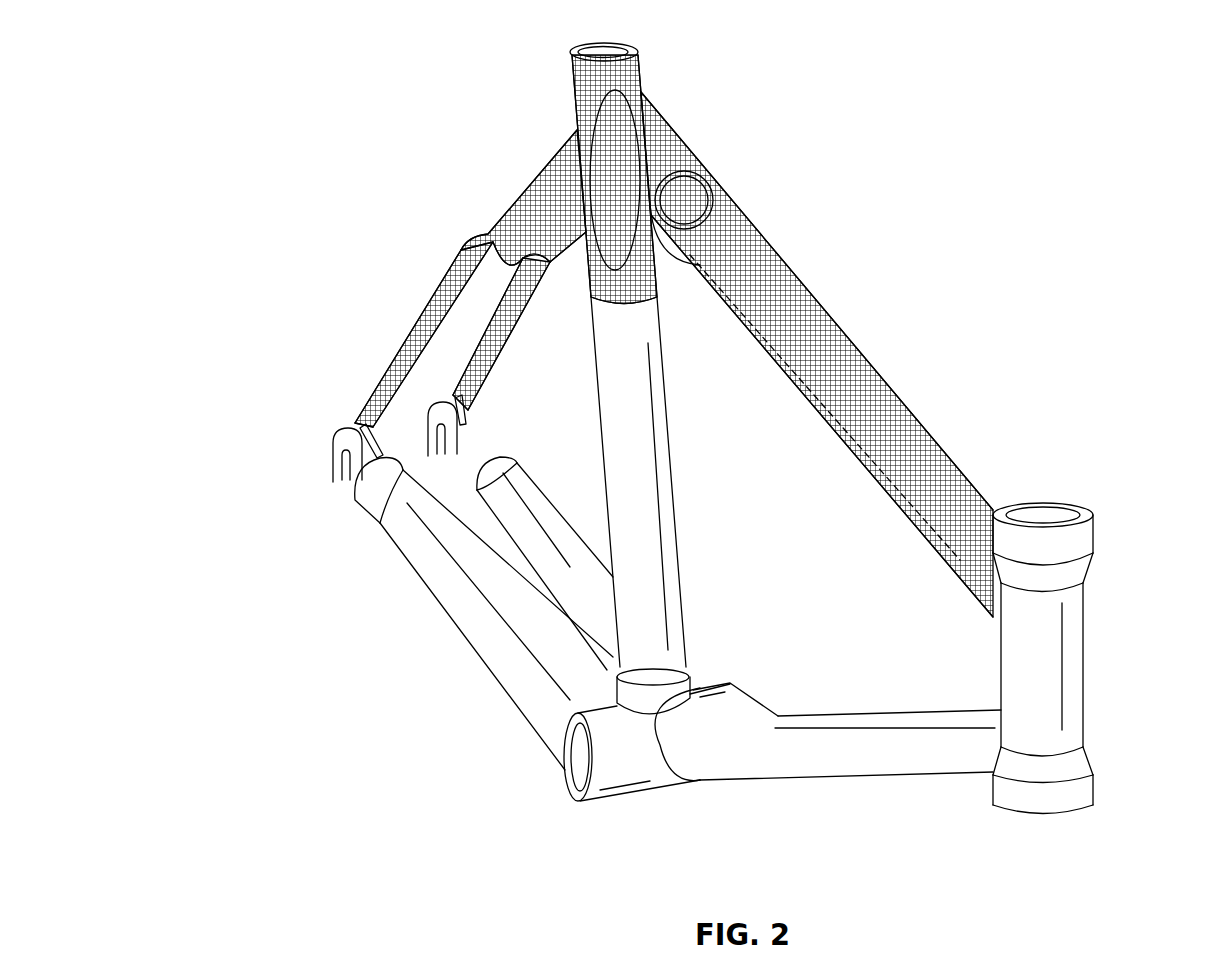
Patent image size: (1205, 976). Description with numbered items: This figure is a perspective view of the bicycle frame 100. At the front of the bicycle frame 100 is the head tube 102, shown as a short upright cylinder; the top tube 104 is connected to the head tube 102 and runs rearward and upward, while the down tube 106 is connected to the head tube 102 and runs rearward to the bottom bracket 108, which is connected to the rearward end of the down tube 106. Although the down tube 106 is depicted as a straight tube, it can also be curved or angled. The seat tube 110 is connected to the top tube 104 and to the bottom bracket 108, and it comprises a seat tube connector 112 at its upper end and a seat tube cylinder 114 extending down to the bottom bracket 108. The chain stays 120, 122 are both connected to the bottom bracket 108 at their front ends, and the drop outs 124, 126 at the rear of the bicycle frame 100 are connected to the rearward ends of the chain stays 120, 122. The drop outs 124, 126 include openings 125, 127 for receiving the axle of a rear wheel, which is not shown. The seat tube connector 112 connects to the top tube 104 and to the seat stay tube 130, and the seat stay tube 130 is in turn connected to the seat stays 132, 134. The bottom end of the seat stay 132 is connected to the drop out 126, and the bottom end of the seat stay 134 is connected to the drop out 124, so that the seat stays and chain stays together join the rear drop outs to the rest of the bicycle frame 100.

The bicycle frame 100 is at (310, 60).
The head tube 102 is at (1073, 660).
The top tube 104 is at (828, 325).
The down tube 106 is at (917, 717).
The bottom bracket 108 is at (620, 790).
The seat tube 110 is at (738, 217).
The seat tube connector 112 is at (578, 78).
The seat tube cylinder 114 is at (667, 427).
The chain stay 120 is at (432, 580).
The chain stay 122 is at (523, 473).
The drop out 124 is at (333, 445).
The opening 125 is at (344, 490).
The drop out 126 is at (433, 420).
The opening 127 is at (440, 461).
The seat stay tube 130 is at (512, 220).
The seat stay 132 is at (493, 362).
The seat stay 134 is at (433, 300).